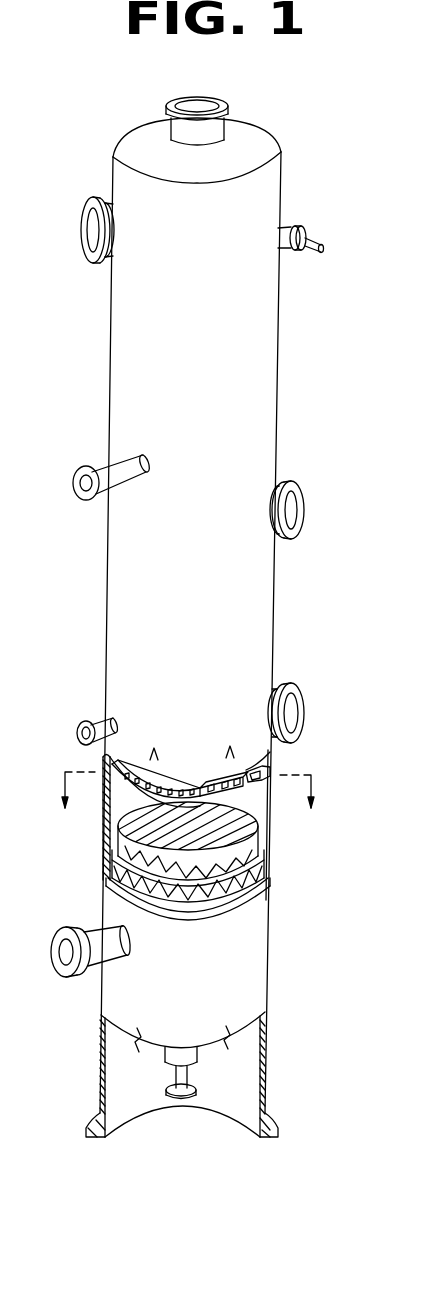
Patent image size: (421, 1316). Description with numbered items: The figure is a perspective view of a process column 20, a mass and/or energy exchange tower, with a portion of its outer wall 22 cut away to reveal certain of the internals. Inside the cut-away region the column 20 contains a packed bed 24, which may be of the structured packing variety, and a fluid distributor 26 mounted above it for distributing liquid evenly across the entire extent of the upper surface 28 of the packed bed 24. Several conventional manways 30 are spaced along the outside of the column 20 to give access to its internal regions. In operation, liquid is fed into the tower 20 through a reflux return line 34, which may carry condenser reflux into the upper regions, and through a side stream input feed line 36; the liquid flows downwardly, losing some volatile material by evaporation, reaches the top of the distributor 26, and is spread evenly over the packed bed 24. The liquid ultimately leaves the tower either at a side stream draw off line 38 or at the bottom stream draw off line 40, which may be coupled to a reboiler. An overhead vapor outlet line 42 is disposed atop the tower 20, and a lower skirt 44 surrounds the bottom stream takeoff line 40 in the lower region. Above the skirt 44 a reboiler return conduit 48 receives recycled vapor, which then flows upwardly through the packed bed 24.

The process column 20 is at (88, 634).
The outer wall 22 is at (272, 817).
The packed bed 24 is at (258, 858).
The fluid distributor 26 is at (268, 771).
The upper surface 28 is at (126, 820).
The manways 30 is at (95, 200).
The reflux return line 34 is at (312, 242).
The side stream input feed line 36 is at (96, 729).
The side stream draw off line 38 is at (101, 463).
The bottom stream draw off line 40 is at (183, 1078).
The overhead vapor outlet line 42 is at (232, 126).
The lower skirt 44 is at (266, 1089).
The reboiler return conduit 48 is at (90, 935).